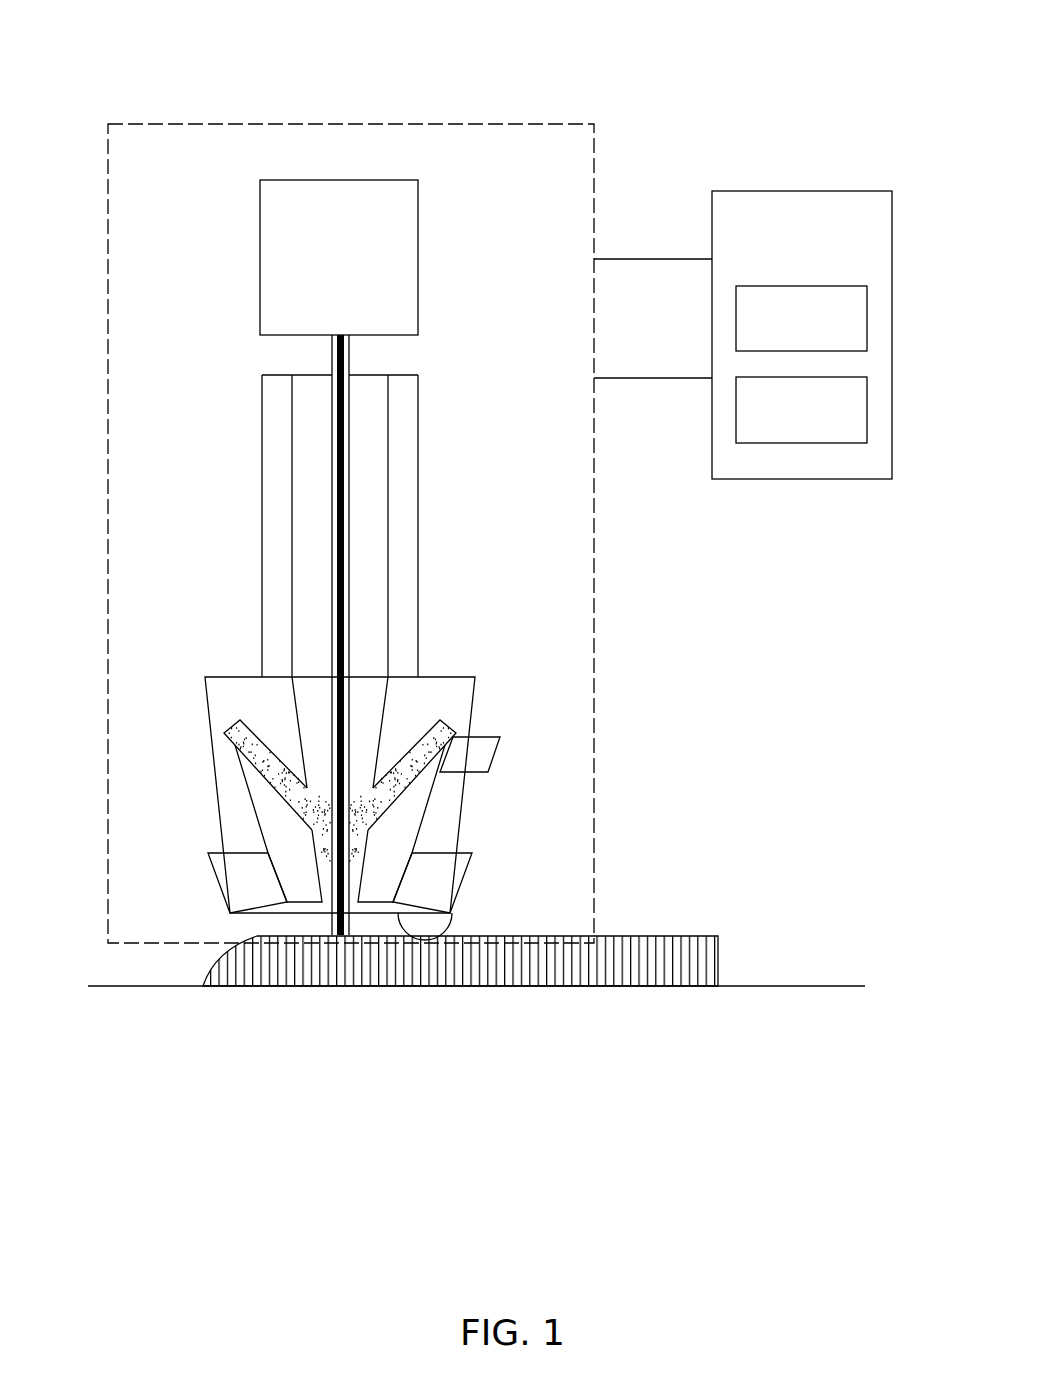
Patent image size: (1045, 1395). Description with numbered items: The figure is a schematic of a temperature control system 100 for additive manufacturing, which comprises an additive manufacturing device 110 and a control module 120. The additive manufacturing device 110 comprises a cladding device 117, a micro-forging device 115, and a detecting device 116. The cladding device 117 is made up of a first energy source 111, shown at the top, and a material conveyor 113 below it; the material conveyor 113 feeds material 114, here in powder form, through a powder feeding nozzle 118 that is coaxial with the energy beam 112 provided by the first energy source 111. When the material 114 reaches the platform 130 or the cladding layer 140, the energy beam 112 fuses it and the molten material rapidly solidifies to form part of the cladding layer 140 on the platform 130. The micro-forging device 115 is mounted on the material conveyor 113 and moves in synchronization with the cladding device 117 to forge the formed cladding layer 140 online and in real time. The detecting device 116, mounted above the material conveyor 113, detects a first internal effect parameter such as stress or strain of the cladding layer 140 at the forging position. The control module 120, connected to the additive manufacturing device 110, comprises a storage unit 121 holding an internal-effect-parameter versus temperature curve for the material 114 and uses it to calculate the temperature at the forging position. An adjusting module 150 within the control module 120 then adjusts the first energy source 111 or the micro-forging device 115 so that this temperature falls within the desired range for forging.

The temperature control system 100 is at (192, 50).
The additive manufacturing device 110 is at (532, 124).
The first energy source 111 is at (260, 257).
The energy beam 112 is at (330, 498).
The material conveyor 113 is at (248, 698).
The material 114 is at (227, 735).
The micro-forging device 115 is at (445, 867).
The detecting device 116 is at (477, 747).
The cladding device 117 is at (443, 370).
The powder feeding nozzle 118 is at (275, 813).
The control module 120 is at (802, 191).
The storage unit 121 is at (850, 377).
The platform 130 is at (140, 987).
The cladding layer 140 is at (460, 965).
The adjusting module 150 is at (850, 286).